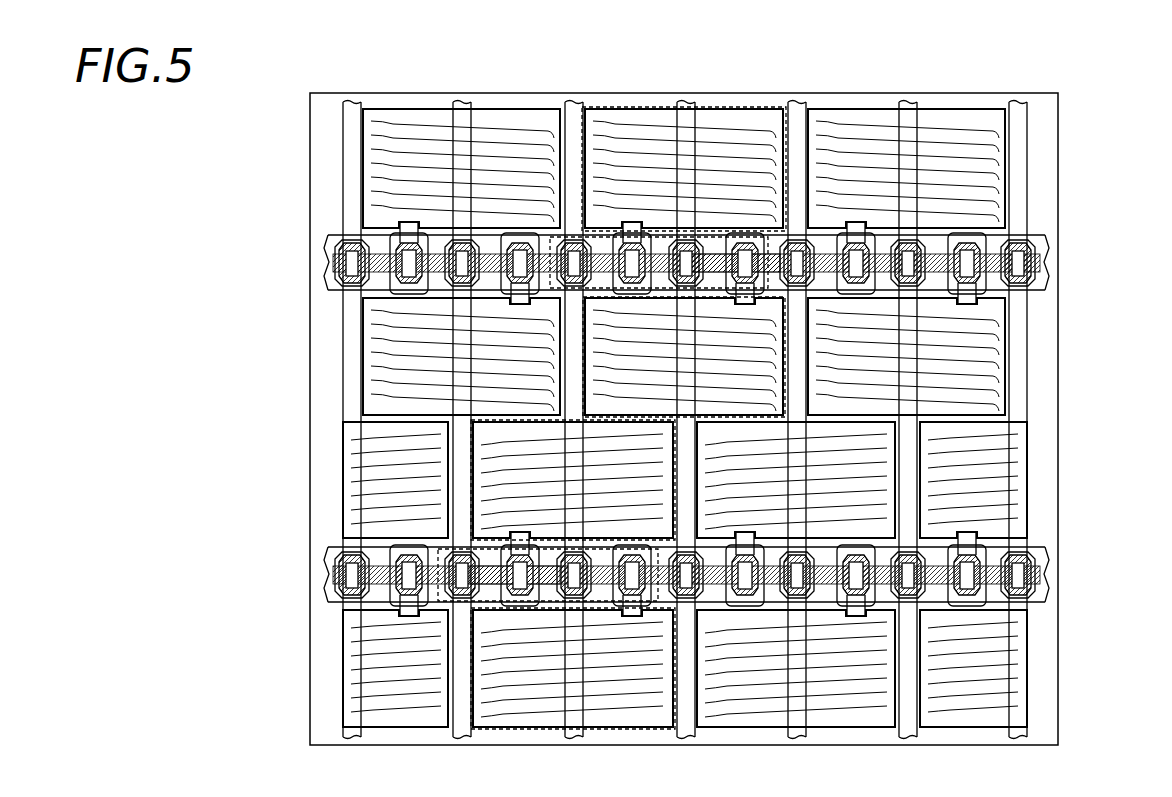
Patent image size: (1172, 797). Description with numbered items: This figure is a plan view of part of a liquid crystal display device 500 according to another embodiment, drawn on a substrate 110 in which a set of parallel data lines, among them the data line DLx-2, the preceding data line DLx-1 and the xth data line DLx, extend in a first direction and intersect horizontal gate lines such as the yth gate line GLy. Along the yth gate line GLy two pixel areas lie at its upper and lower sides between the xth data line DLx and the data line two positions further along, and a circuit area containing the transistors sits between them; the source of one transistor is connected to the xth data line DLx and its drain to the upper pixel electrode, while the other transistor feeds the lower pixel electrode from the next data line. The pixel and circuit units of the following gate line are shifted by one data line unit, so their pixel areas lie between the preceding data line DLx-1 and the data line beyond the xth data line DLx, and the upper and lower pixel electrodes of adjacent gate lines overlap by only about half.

The liquid crystal display device 500 is at (277, 70).
The substrate 110 is at (1060, 121).
The data line DLx-2 is at (348, 404).
The (x-1)th data line DLx-1 is at (460, 404).
The xth data line DLx is at (569, 404).
The yth gate line GLy is at (655, 262).